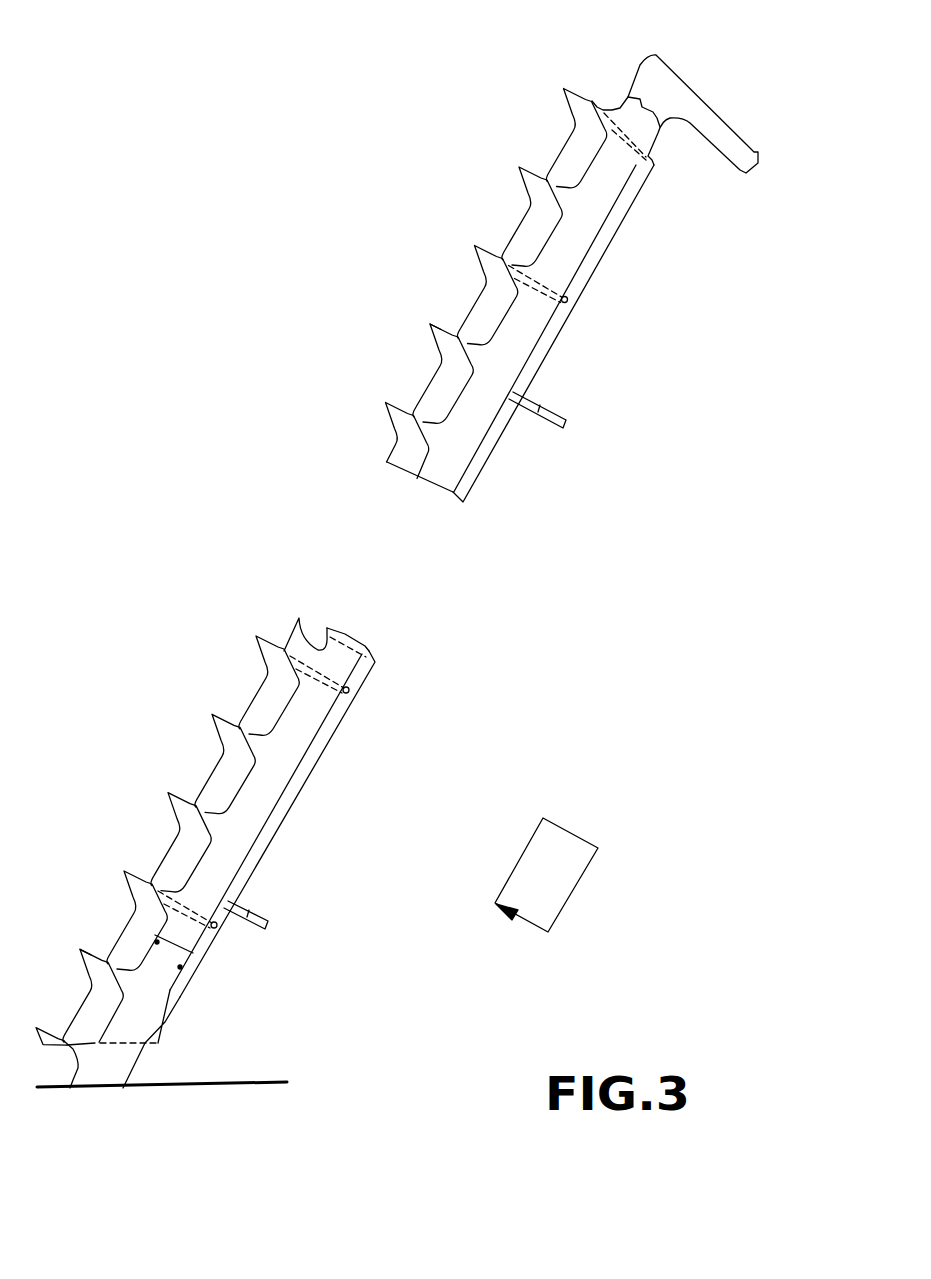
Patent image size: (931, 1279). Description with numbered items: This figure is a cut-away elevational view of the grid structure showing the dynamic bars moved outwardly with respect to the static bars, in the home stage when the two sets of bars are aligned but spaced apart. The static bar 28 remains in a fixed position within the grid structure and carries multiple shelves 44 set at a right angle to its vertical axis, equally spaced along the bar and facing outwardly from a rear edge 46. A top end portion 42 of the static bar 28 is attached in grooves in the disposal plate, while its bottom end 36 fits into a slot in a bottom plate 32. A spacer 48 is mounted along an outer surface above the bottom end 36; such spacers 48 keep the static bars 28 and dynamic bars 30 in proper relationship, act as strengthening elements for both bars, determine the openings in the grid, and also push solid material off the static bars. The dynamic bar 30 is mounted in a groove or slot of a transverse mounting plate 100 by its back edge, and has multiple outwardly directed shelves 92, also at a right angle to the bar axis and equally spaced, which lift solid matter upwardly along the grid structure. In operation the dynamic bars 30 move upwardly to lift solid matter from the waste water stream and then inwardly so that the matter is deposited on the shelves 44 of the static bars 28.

The static bar 28 is at (405, 541).
The dynamic bar 30 is at (260, 671).
The bottom plate 32 is at (188, 1064).
The bottom end 36 is at (139, 1082).
The top end portion 42 is at (675, 105).
The shelves 44 is at (321, 567).
The rear edge 46 is at (412, 581).
The spacer 48 is at (206, 1036).
The shelves 92 is at (243, 594).
The transverse mounting plate 100 is at (442, 669).